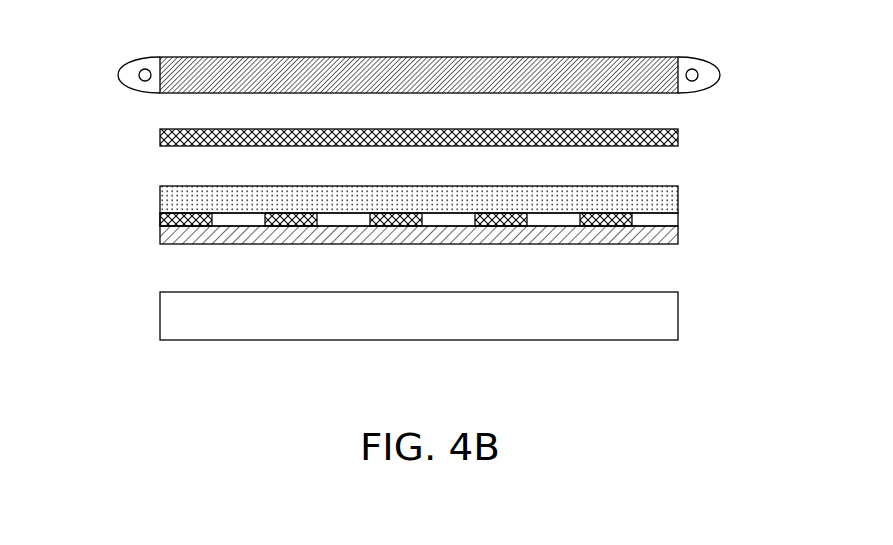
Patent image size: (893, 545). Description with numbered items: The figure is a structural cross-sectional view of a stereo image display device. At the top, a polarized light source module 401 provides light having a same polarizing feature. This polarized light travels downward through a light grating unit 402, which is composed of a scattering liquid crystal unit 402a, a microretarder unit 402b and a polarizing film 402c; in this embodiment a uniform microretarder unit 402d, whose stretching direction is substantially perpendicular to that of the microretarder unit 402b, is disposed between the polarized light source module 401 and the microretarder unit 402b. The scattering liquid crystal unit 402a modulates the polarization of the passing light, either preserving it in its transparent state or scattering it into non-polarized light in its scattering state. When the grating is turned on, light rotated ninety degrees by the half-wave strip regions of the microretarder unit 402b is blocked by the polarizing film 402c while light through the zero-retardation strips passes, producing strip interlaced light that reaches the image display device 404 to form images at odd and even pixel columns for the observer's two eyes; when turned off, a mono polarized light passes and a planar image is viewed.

The polarized light source module 401 is at (193, 57).
The light grating unit 402 is at (428, 222).
The scattering liquid crystal unit 402a is at (666, 198).
The microretarder unit 402b is at (678, 220).
The polarizing film 402c is at (678, 236).
The uniform microretarder unit 402d is at (678, 139).
The image display device 404 is at (177, 320).